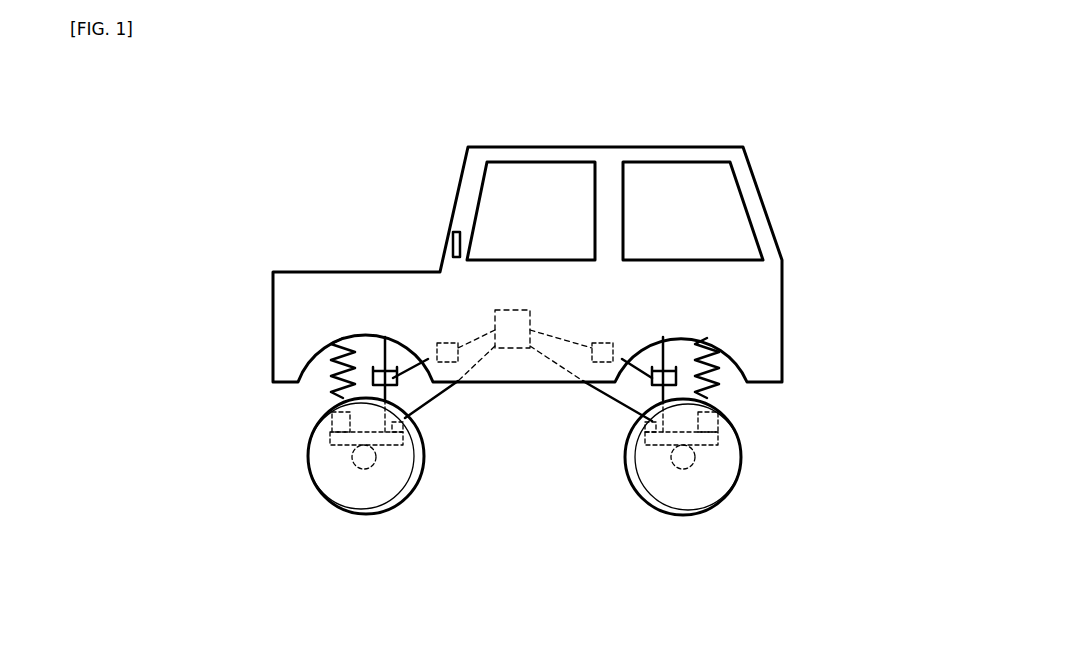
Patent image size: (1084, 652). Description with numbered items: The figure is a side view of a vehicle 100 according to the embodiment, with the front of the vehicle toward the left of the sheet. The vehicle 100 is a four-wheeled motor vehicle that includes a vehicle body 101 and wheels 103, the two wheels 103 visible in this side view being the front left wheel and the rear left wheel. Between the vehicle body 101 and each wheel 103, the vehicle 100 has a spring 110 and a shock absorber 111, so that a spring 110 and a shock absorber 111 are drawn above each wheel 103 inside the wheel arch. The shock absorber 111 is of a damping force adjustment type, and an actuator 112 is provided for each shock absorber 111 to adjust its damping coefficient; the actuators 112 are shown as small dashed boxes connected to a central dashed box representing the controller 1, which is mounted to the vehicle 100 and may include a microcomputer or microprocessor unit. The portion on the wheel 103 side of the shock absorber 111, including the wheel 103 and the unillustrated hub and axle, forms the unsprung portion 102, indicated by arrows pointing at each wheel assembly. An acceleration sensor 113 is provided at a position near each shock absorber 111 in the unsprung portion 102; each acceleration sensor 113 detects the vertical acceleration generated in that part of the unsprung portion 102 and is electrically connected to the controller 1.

The vehicle 100 is at (652, 112).
The controller 1 is at (515, 310).
The vehicle body 101 is at (468, 190).
The unsprung portion 102 is at (297, 452).
The wheel 103 is at (330, 498).
The spring 110 is at (337, 356).
The shock absorber 111 is at (398, 382).
The actuator 112 is at (438, 345).
The acceleration sensor 113 is at (407, 495).